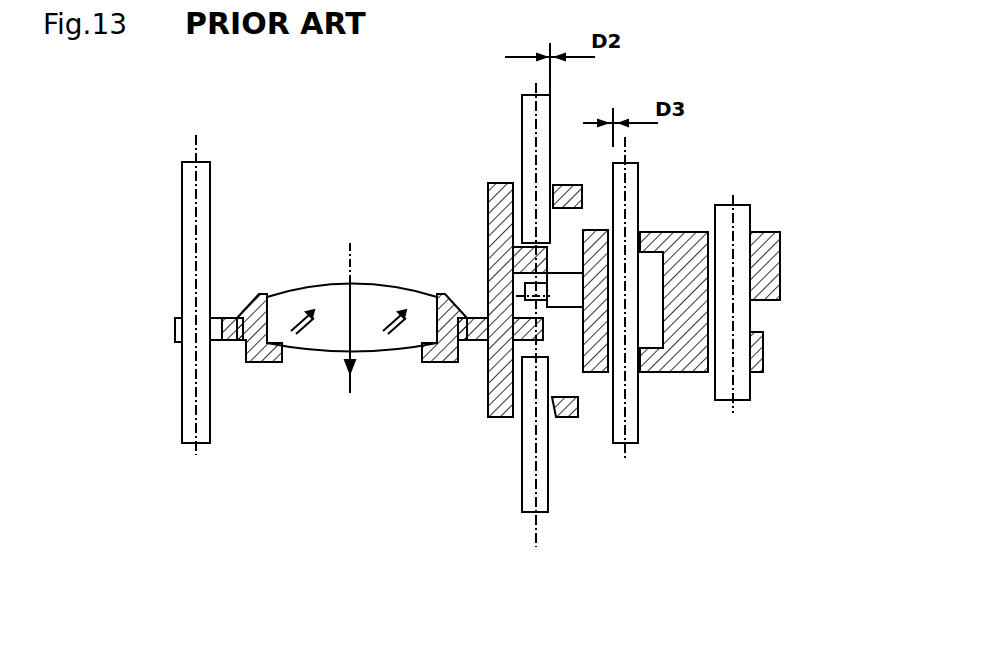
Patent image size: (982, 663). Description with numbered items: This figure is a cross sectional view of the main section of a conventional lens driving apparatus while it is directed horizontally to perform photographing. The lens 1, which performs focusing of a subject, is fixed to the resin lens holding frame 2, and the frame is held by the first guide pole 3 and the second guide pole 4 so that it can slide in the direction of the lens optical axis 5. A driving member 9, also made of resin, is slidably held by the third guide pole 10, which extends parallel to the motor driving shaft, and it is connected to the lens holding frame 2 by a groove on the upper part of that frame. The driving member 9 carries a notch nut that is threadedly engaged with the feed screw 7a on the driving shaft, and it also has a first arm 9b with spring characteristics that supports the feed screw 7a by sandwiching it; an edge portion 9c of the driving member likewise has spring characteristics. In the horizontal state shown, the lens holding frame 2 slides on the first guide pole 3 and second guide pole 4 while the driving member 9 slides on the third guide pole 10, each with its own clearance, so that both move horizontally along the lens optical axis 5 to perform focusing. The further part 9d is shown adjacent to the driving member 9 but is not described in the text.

The lens 1 is at (322, 291).
The lens holding frame 2 is at (488, 198).
The first guide pole 3 is at (522, 112).
The second guide pole 4 is at (183, 190).
The lens optical axis 5 is at (351, 322).
The feed screw 7a is at (748, 210).
The driving member 9 is at (683, 373).
The first arm 9b is at (765, 339).
The edge portion 9c is at (557, 284).
The projection 9d is at (782, 245).
The third guide pole 10 is at (638, 180).